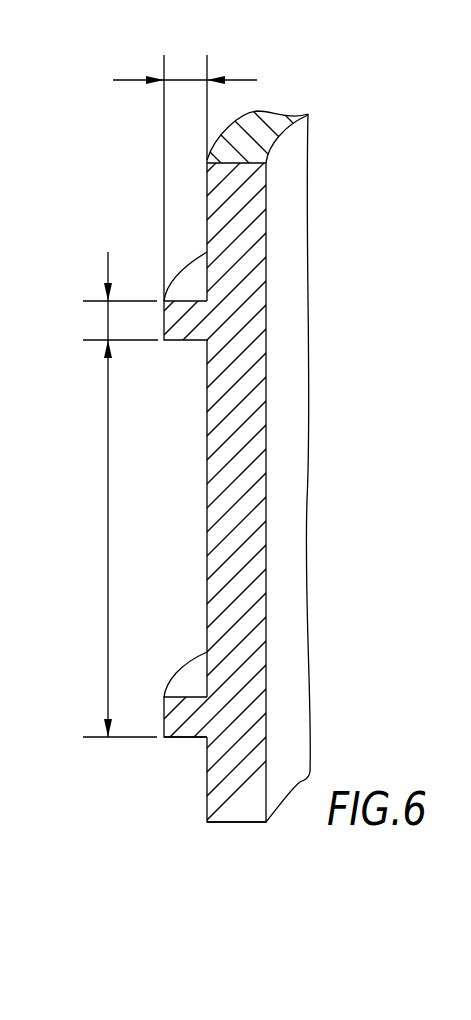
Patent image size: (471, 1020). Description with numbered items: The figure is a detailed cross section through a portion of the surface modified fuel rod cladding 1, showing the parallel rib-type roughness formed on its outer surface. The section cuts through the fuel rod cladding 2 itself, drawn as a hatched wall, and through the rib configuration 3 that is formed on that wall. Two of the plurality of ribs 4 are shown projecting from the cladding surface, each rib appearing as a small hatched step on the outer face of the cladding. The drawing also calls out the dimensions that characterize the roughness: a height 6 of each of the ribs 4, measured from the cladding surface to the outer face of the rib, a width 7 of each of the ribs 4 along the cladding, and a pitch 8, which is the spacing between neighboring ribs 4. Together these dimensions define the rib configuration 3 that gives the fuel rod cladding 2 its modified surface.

The surface modified fuel rod cladding 1 is at (360, 127).
The fuel rod cladding 2 is at (225, 823).
The rib configuration 3 is at (180, 751).
The ribs 4 is at (183, 344).
The height 6 is at (185, 80).
The width 7 is at (108, 321).
The pitch 8 is at (108, 512).